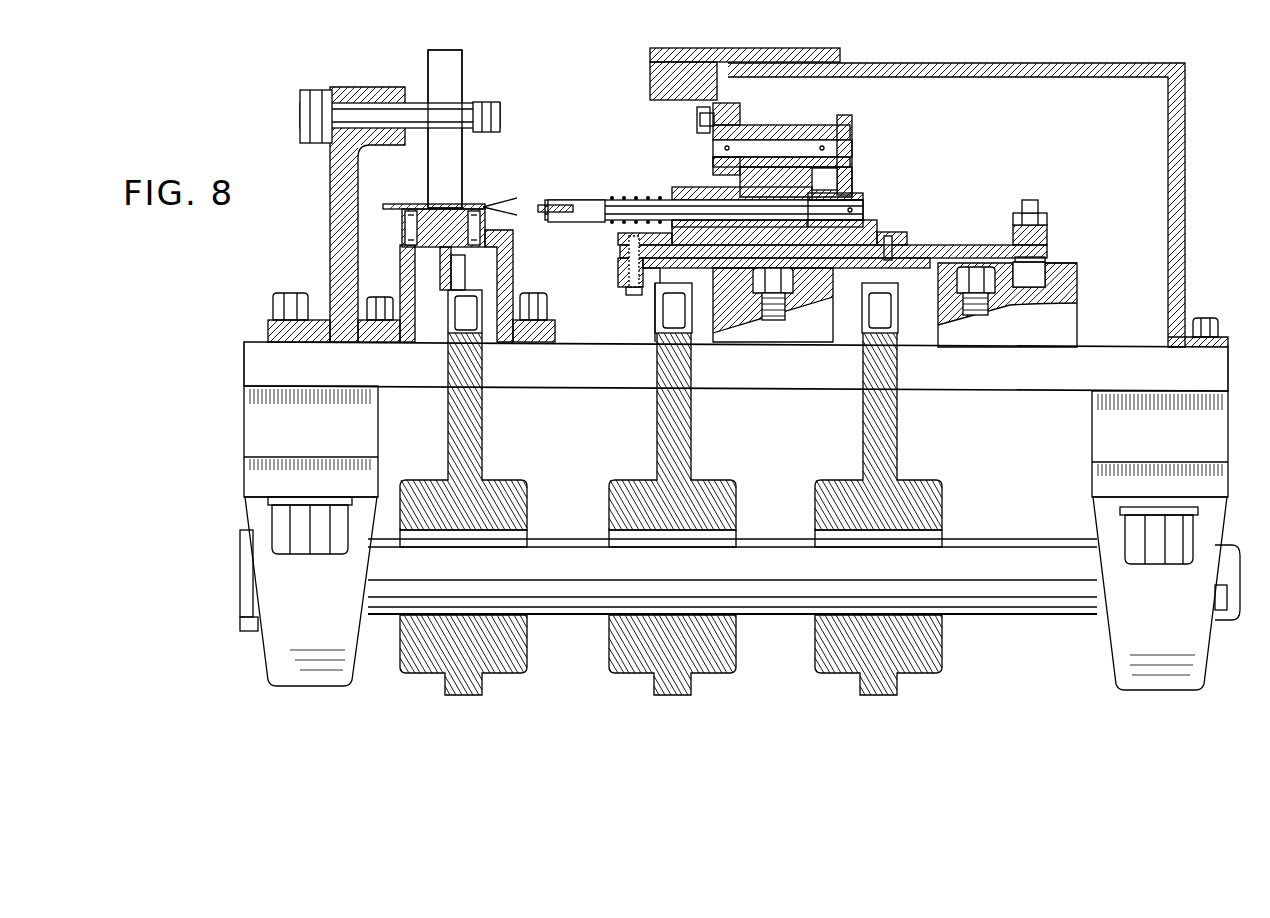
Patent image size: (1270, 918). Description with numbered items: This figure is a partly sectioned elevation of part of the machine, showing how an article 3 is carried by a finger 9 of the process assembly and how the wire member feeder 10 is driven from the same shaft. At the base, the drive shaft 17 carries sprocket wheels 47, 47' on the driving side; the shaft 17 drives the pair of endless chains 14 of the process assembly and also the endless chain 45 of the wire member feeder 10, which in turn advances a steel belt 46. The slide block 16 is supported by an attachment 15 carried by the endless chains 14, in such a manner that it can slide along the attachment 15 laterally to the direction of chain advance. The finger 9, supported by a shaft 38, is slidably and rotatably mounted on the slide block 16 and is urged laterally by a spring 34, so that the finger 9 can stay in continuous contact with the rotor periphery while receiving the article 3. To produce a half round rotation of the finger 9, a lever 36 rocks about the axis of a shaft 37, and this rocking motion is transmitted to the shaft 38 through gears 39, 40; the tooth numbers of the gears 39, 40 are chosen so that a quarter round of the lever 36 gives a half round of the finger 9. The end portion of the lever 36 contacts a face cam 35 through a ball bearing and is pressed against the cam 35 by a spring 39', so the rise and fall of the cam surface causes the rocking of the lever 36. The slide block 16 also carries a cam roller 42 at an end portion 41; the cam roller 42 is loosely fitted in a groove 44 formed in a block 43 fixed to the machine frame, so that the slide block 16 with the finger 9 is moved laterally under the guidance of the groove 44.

The article 3 is at (512, 194).
The finger 9 is at (584, 221).
The wire member feeder 10 is at (400, 258).
The endless chains 14 is at (656, 312).
The attachment 15 is at (620, 262).
The slide block 16 is at (905, 243).
The shaft 17 is at (716, 584).
The spring 34 is at (650, 198).
The face cam 35 is at (650, 90).
The lever 36 is at (709, 134).
The shaft 37 is at (852, 150).
The shaft 38 is at (865, 212).
The gear 39 is at (866, 149).
The spring 39' is at (781, 115).
The gear 40 is at (852, 190).
The end portion 41 is at (981, 250).
The cam roller 42 is at (1040, 268).
The block 43 is at (1072, 283).
The groove 44 is at (1076, 268).
The endless chain 45 is at (446, 302).
The steel belt 46 is at (433, 205).
The sprocket wheel 47 is at (775, 514).
The sprocket wheel 47' is at (463, 514).